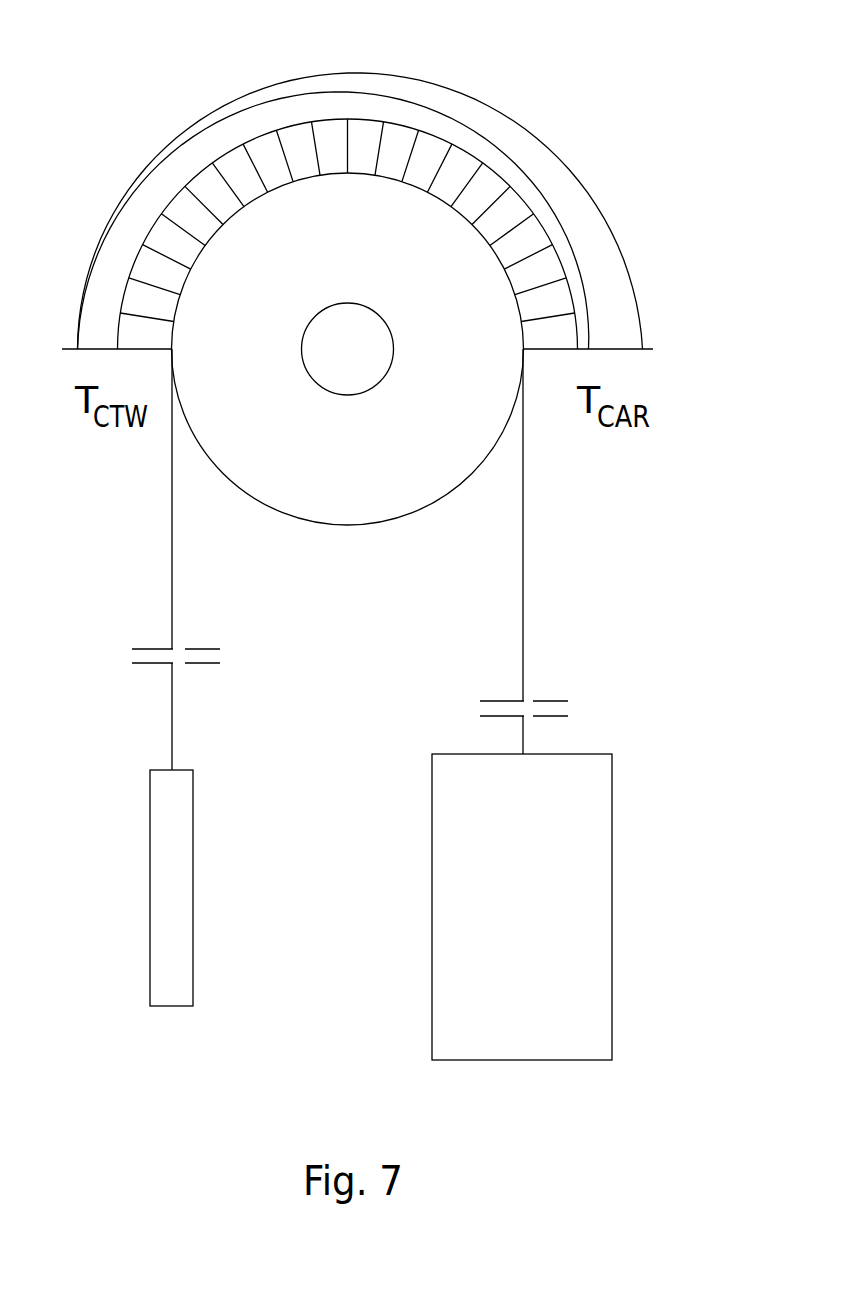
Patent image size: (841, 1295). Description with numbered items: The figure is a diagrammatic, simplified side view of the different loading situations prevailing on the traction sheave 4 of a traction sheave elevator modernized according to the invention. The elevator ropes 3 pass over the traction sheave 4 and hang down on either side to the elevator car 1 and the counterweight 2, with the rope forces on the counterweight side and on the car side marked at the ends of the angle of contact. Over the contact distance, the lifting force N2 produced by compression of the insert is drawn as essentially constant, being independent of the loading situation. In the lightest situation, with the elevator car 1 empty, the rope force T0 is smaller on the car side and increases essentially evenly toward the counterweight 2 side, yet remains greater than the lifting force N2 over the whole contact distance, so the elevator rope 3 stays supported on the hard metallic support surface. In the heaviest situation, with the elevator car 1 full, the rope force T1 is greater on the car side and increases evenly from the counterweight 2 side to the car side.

The elevator car 1 is at (432, 935).
The counterweight 2 is at (193, 850).
The elevator ropes 3 is at (523, 653).
The traction sheave 4 is at (381, 515).
The rope force in the lightest loading situation T0 is at (183, 142).
The rope force in the heaviest loading situation T1 is at (511, 112).
The lifting force produced by compression of the insert N2 is at (541, 223).